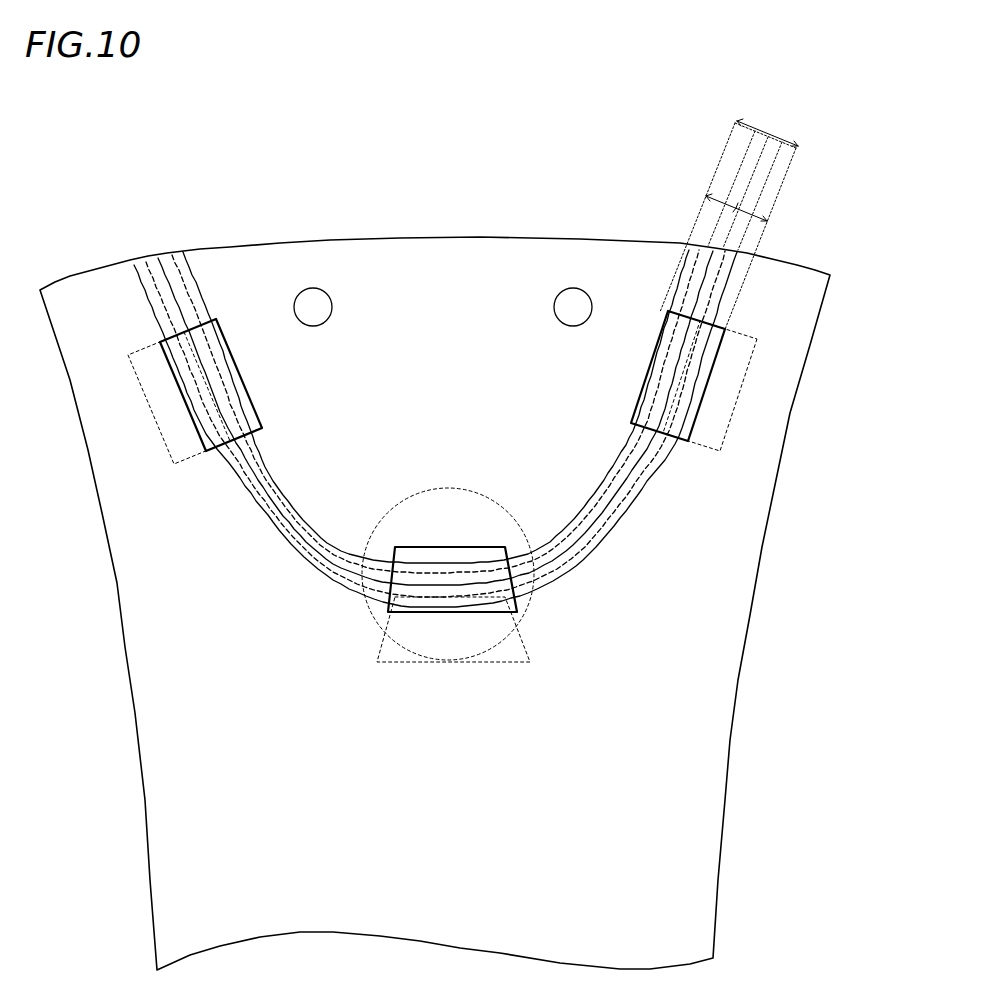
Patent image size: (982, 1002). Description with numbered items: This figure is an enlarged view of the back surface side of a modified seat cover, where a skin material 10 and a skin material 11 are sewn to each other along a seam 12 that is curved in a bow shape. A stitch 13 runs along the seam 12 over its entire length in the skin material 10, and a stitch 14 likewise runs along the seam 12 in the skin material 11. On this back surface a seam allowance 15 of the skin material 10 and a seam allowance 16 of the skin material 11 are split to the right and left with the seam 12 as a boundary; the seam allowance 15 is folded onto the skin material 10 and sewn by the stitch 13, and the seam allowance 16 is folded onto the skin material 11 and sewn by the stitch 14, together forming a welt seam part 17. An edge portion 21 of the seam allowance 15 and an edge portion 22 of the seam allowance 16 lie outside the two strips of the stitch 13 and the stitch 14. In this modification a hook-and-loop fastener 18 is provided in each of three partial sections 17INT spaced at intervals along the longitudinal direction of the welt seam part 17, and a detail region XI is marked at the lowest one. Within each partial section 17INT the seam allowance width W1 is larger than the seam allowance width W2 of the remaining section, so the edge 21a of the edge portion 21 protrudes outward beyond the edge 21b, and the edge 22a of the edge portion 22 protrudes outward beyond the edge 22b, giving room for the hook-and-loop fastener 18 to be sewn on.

The skin material 10 is at (424, 537).
The skin material 11 is at (133, 592).
The seam 12 is at (165, 268).
The stitch 13 is at (182, 265).
The stitch 14 is at (160, 292).
The seam allowance 15 is at (186, 268).
The seam allowance 16 is at (140, 318).
The welt seam part 17 is at (382, 349).
The partial section 17INT is at (843, 462).
The hook-and-loop fastener 18 is at (167, 345).
The edge portion 21 is at (662, 221).
The edge 21a is at (660, 312).
The edge 21b is at (692, 287).
The edge portion 22 is at (791, 254).
The edge 22a is at (700, 345).
The edge 22b is at (722, 278).
The seam allowance width W1 is at (790, 140).
The seam allowance width W2 is at (757, 212).
The detail view indicator XI is at (530, 603).